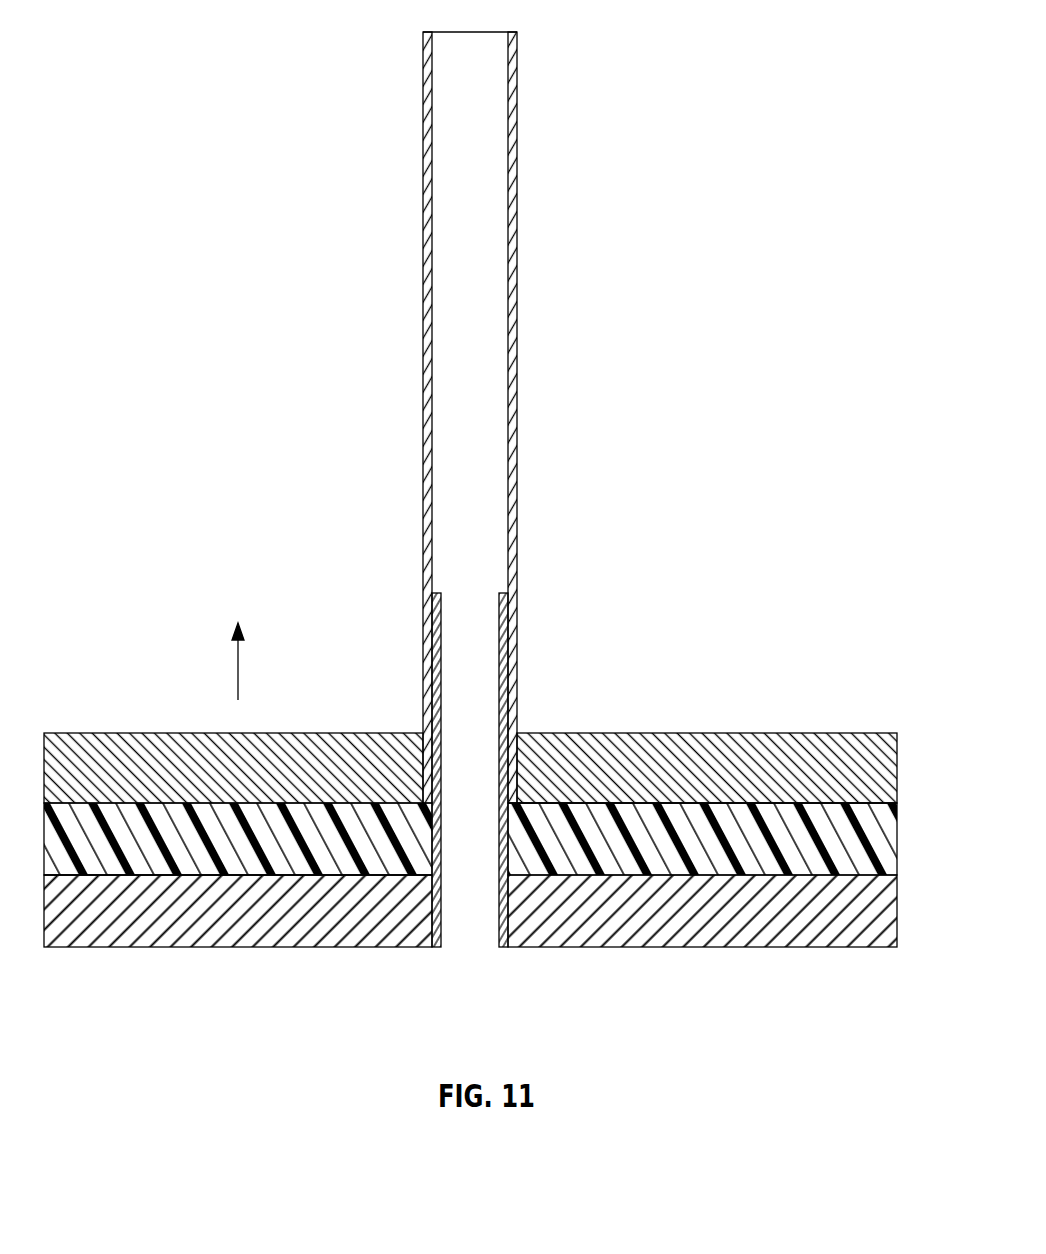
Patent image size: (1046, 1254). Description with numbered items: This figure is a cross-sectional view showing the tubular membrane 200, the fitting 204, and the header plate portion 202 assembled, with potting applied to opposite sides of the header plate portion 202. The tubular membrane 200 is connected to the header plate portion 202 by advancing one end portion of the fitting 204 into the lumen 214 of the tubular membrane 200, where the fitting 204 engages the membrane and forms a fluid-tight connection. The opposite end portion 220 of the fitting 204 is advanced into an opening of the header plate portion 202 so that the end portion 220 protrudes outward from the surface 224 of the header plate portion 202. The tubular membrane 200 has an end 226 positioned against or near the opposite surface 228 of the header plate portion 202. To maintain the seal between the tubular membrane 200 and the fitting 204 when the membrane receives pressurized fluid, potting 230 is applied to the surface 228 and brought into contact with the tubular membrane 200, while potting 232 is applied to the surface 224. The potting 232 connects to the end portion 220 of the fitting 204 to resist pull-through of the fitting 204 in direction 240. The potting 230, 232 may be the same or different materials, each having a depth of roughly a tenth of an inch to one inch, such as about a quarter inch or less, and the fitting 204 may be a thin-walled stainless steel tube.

The tubular membrane 200 is at (483, 347).
The header plate portion 202 is at (880, 836).
The fitting 204 is at (470, 910).
The lumen 214 is at (463, 427).
The opposite end portion 220 is at (440, 915).
The surface 224 is at (176, 874).
The end 226 is at (525, 820).
The opposite surface 228 is at (332, 803).
The potting 230 is at (707, 775).
The potting 232 is at (730, 908).
The direction 240 is at (238, 670).